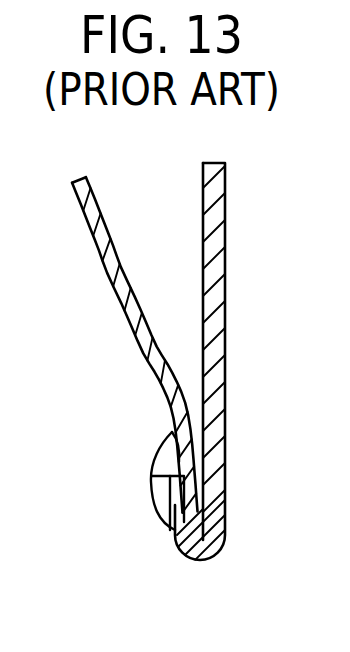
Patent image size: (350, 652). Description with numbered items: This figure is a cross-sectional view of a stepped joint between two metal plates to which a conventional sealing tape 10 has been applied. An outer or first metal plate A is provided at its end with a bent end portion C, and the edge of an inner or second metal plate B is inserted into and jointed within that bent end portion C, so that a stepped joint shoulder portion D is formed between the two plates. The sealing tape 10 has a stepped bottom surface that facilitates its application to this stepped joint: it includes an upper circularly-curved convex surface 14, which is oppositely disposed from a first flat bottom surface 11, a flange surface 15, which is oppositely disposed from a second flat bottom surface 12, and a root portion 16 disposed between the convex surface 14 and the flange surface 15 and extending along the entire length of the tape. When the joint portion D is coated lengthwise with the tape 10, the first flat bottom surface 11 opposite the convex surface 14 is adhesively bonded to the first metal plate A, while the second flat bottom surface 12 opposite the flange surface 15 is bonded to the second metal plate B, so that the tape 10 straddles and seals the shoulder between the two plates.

The first metal plate A is at (225, 233).
The second metal plate B is at (108, 234).
The bent end portion C is at (198, 562).
The joint shoulder portion D is at (150, 475).
The sealing tape 10 is at (146, 491).
The first flat bottom surface 11 is at (158, 528).
The second flat bottom surface 12 is at (165, 432).
The convex surface 14 is at (150, 505).
The flange surface 15 is at (156, 448).
The root portion 16 is at (168, 450).